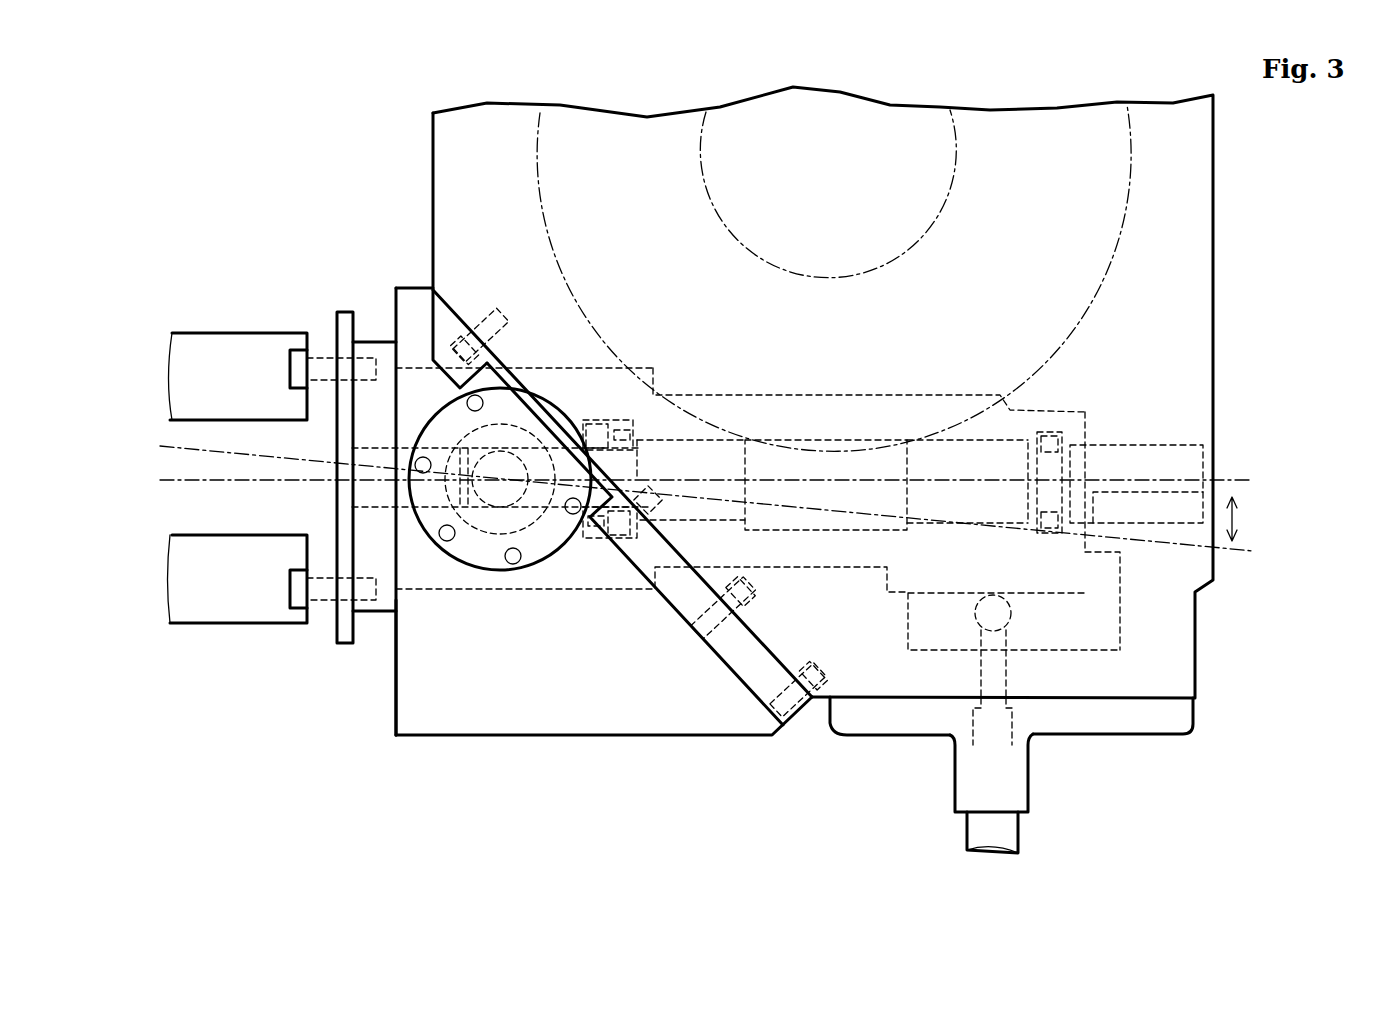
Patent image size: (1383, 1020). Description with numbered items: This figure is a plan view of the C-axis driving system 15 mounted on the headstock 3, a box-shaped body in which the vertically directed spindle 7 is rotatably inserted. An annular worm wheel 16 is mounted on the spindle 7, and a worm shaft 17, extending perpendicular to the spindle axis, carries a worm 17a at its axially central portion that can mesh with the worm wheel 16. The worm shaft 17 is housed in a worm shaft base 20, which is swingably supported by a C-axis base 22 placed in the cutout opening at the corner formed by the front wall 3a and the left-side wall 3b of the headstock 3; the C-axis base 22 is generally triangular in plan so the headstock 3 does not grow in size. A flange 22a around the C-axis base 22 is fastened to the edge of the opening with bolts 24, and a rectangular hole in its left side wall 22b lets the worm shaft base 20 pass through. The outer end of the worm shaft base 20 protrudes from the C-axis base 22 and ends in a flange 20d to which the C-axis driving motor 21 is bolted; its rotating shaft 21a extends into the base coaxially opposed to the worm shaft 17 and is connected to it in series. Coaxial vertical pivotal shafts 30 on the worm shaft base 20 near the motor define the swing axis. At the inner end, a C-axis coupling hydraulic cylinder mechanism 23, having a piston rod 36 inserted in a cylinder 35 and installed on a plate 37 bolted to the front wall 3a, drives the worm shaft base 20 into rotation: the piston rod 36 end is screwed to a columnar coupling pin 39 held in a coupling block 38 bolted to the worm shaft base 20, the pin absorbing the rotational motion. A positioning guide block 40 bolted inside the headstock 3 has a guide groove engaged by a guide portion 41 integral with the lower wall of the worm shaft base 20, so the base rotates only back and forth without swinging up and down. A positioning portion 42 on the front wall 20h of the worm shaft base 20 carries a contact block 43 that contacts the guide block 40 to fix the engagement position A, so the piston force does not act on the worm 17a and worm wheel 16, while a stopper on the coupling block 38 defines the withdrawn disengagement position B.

The headstock 3 is at (1216, 246).
The front wall 3a is at (856, 699).
The left-side wall 3b is at (432, 217).
The spindle 7 is at (953, 187).
The C-axis driving system 15 is at (380, 207).
The worm wheel 16 is at (1098, 278).
The worm shaft 17 is at (995, 432).
The worm 17a is at (874, 432).
The worm shaft base 20 is at (582, 600).
The flange 20d is at (353, 312).
The front wall 20h is at (850, 568).
The C-axis driving motor 21 is at (270, 328).
The rotating shaft 21a is at (405, 513).
The C-axis base 22 is at (644, 742).
The flange 22a is at (668, 600).
The left side wall 22b is at (395, 660).
The C-axis coupling hydraulic cylinder mechanism 23 is at (1066, 771).
The bolts 24 is at (487, 300).
The pivotal shafts 30 is at (497, 515).
The cylinder 35 is at (1020, 832).
The piston rod 36 is at (1008, 671).
The plate 37 is at (1160, 735).
The coupling block 38 is at (907, 613).
The coupling pin 39 is at (976, 622).
The positioning guide block 40 is at (1182, 440).
The guide portion 41 is at (1087, 420).
The positioning portion 42 is at (1120, 575).
The contact block 43 is at (1122, 546).
The engagement position A is at (1233, 481).
The disengagement position B is at (1238, 548).